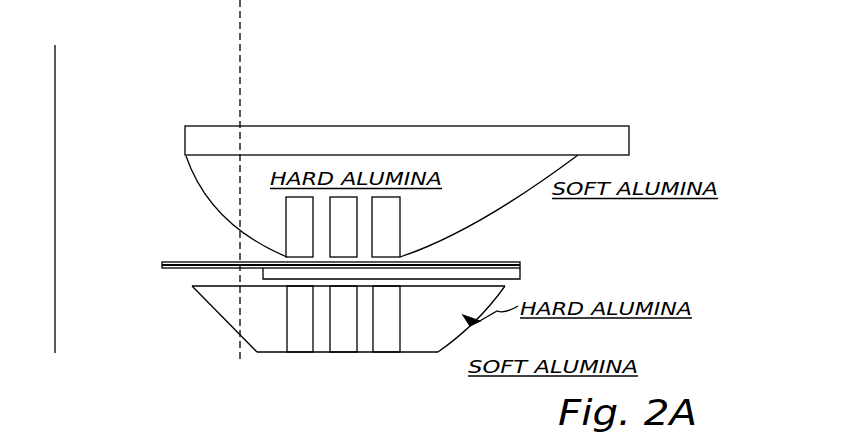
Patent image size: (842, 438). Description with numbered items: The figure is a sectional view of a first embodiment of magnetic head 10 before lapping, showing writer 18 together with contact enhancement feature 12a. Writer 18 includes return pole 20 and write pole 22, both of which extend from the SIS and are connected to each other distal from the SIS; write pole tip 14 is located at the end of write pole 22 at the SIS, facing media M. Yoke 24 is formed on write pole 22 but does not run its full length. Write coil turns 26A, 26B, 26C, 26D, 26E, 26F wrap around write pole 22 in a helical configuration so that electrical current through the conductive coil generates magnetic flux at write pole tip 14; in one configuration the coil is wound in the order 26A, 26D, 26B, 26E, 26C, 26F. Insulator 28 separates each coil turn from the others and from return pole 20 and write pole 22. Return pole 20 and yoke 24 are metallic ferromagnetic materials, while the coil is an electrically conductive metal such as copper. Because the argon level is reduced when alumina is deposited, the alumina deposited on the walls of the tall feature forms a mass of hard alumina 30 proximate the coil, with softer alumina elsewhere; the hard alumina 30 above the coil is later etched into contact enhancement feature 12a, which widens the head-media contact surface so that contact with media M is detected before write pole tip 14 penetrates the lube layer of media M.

The magnetic head 10 is at (656, 63).
The contact enhancement feature 12a is at (200, 183).
The write pole tip 14 is at (179, 268).
The writer 18 is at (128, 157).
The return pole 20 is at (268, 140).
The write pole 22 is at (191, 262).
The yoke 24 is at (520, 279).
The write coil turn 26A is at (297, 223).
The write coil turn 26B is at (343, 213).
The write coil turn 26C is at (388, 222).
The write coil turn 26D is at (305, 343).
The write coil turn 26E is at (342, 342).
The write coil turn 26F is at (393, 345).
The insulator 28 is at (363, 223).
The hard alumina 30 is at (502, 197).
The media M is at (54, 210).
The element SIS is at (230, 196).